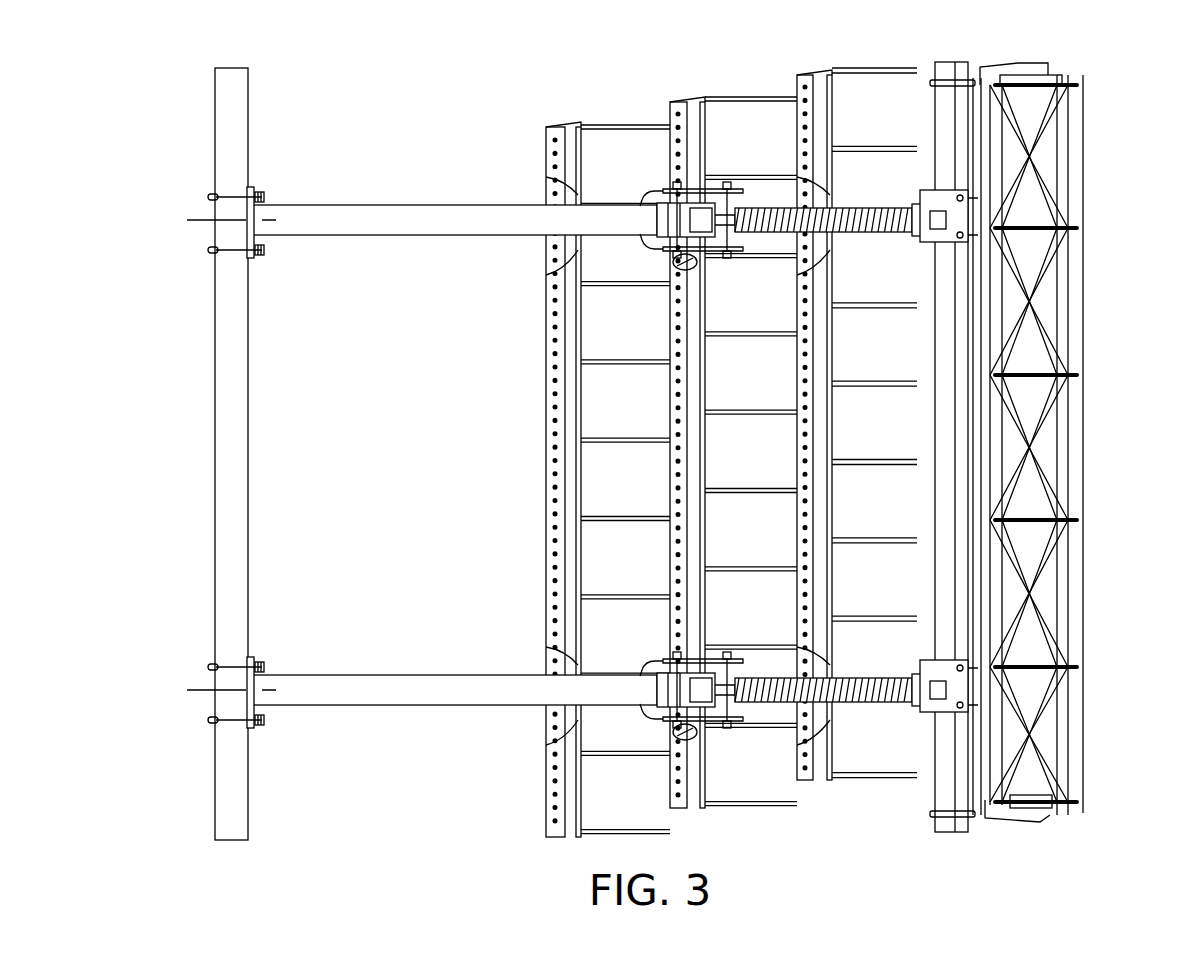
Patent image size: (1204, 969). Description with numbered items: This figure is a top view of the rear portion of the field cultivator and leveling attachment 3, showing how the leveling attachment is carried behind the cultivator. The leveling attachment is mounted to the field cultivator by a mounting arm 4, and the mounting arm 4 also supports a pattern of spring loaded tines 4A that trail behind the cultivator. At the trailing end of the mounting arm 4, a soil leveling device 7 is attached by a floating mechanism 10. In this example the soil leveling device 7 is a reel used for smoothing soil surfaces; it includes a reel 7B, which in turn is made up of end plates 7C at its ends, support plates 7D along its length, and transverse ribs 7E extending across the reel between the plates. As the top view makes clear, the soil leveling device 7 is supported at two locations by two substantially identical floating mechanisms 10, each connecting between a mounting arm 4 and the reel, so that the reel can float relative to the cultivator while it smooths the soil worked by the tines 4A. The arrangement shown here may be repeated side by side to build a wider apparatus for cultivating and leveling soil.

The field cultivator and leveling attachment 3 is at (314, 115).
The mounting arm 4 is at (582, 439).
The spring loaded tines 4A is at (621, 763).
The floating mechanism 10 is at (848, 190).
The soil leveling device 7 is at (1045, 424).
The reel 7B is at (1087, 322).
The end plates 7C is at (1053, 100).
The support plates 7D is at (1047, 660).
The transverse ribs 7E is at (1092, 603).